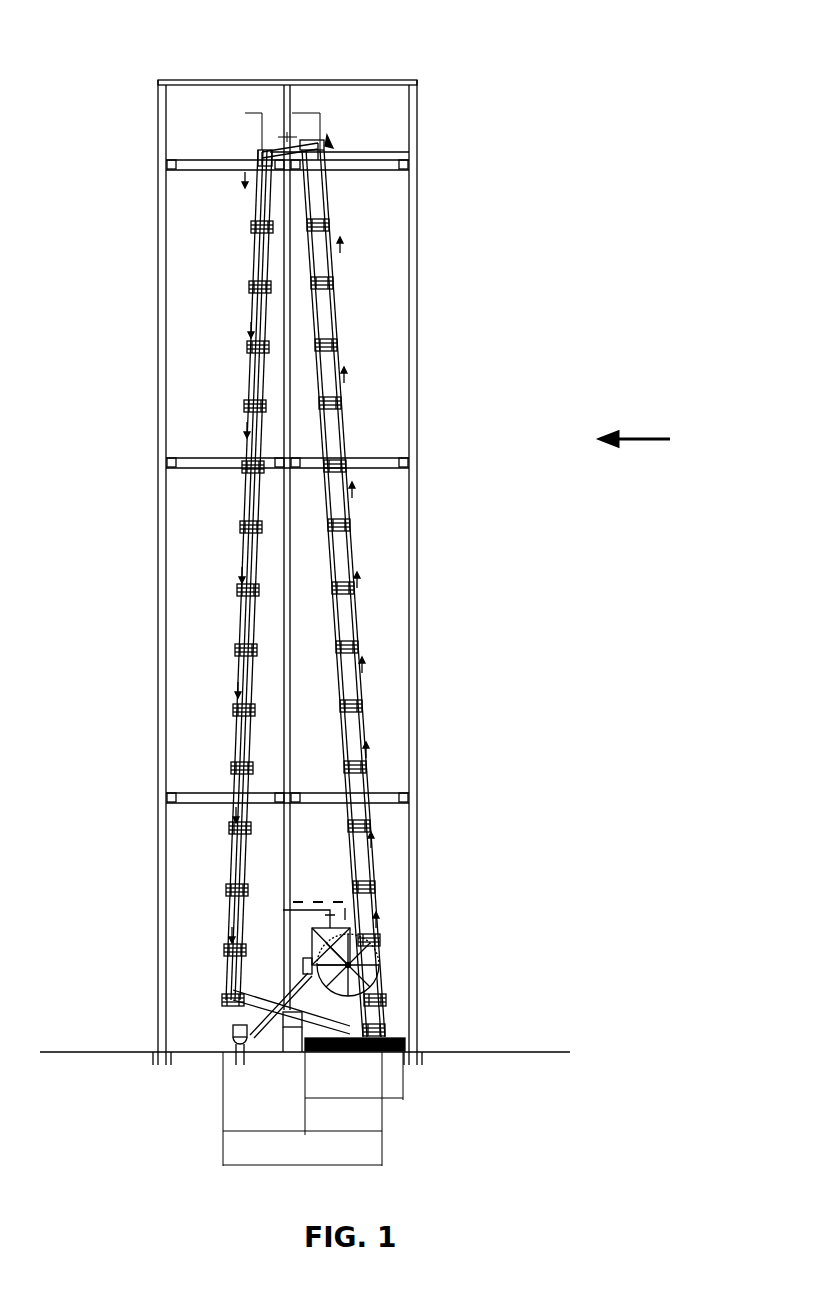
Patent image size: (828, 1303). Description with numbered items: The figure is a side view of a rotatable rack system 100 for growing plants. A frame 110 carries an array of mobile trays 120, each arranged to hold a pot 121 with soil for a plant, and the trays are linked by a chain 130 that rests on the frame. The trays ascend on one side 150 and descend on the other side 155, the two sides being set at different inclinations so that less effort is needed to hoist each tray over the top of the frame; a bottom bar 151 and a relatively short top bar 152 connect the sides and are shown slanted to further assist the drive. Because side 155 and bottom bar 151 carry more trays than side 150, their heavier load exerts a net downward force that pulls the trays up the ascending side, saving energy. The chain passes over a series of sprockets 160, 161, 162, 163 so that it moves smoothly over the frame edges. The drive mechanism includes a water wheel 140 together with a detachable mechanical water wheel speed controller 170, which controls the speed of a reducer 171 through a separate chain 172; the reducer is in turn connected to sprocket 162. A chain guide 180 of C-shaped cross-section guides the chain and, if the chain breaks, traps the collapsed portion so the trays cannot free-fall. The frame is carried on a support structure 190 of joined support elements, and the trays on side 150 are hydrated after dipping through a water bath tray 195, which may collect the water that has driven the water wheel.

The rotatable rack system 100 is at (352, 40).
The frame 110 is at (262, 146).
The mobile tray 120 is at (236, 536).
The pot 121 is at (235, 524).
The chain 130 is at (375, 743).
The water wheel 140 is at (340, 937).
The ascending side 150 is at (345, 557).
The bottom bar 151 is at (353, 1052).
The top bar 152 is at (318, 135).
The descending side 155 is at (247, 424).
The sprocket 160 is at (330, 152).
The sprocket 161 is at (395, 1000).
The sprocket 162 is at (237, 983).
The sprocket 163 is at (158, 160).
The mechanical water wheel speed controller 170 is at (307, 960).
The reducer 171 is at (238, 1033).
The separate chain 172 is at (290, 982).
The chain guide 180 is at (250, 370).
The support structure 190 is at (417, 261).
The water bath tray 195 is at (388, 1033).